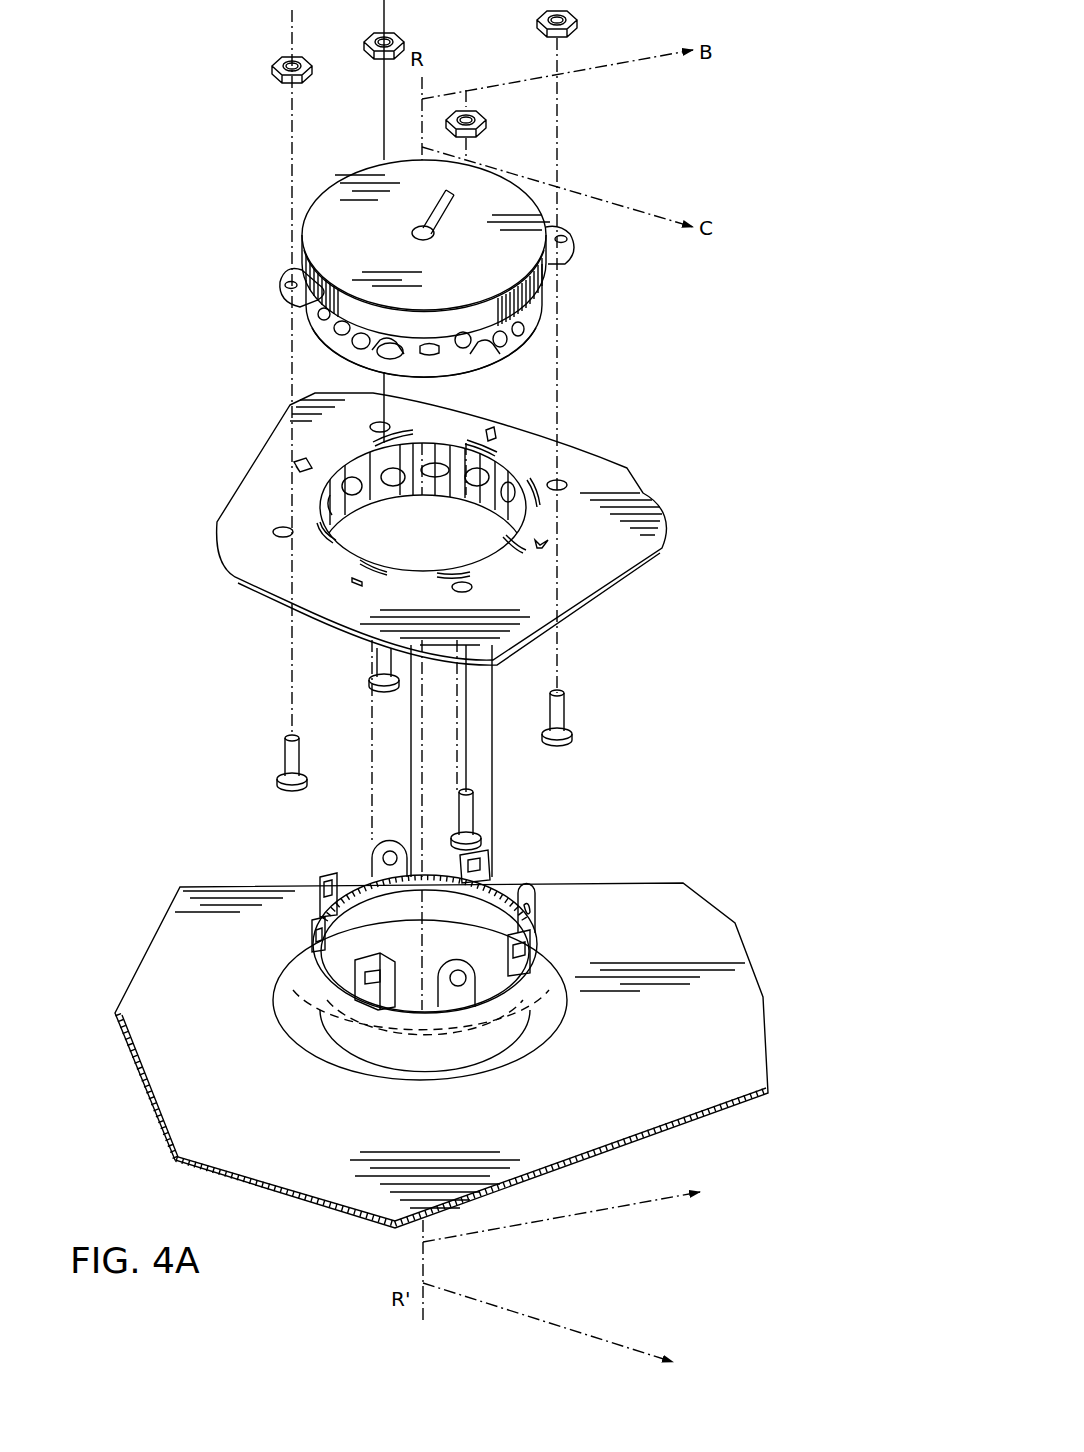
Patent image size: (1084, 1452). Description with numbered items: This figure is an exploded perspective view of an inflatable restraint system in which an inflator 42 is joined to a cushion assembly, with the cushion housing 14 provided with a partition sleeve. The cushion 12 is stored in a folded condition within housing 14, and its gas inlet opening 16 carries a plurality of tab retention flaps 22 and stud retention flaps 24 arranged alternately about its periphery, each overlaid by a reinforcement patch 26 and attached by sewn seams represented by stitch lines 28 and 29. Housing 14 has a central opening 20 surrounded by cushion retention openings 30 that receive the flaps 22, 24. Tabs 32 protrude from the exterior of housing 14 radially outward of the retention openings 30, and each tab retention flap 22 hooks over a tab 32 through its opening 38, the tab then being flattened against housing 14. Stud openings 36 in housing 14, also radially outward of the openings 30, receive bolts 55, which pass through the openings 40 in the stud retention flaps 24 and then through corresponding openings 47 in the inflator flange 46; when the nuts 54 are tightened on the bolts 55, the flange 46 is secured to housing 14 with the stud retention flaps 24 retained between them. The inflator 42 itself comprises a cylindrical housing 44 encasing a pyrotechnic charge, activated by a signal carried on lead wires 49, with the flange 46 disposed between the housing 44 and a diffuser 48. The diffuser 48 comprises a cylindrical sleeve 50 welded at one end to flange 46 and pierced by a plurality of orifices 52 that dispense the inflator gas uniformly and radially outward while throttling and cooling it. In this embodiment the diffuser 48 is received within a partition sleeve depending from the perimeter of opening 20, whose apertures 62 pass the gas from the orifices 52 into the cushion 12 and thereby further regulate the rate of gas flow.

The cushion 12 is at (476, 1007).
The housing 14 is at (437, 512).
The gas inlet opening 16 is at (505, 995).
The opening 20 is at (482, 553).
The tab retention flaps 22 is at (322, 890).
The stud retention flaps 24 is at (488, 897).
The reinforcement patch 26 is at (462, 1075).
The stitch line 28 is at (312, 1050).
The stitch line 29 is at (350, 1063).
The cushion retention openings 30 is at (380, 428).
The tabs 32 is at (294, 463).
The stud openings 36 is at (567, 485).
The opening 38 is at (488, 865).
The opening 40 is at (378, 865).
The inflator 42 is at (424, 257).
The cylindrical housing 44 is at (333, 205).
The flange 46 is at (295, 300).
The openings 47 is at (285, 284).
The diffuser 48 is at (560, 320).
The lead wires 49 is at (445, 208).
The cylindrical sleeve 50 is at (500, 352).
The orifices 52 is at (333, 330).
The nuts 54 is at (268, 55).
The bolts 55 is at (378, 653).
The apertures 62 is at (350, 452).